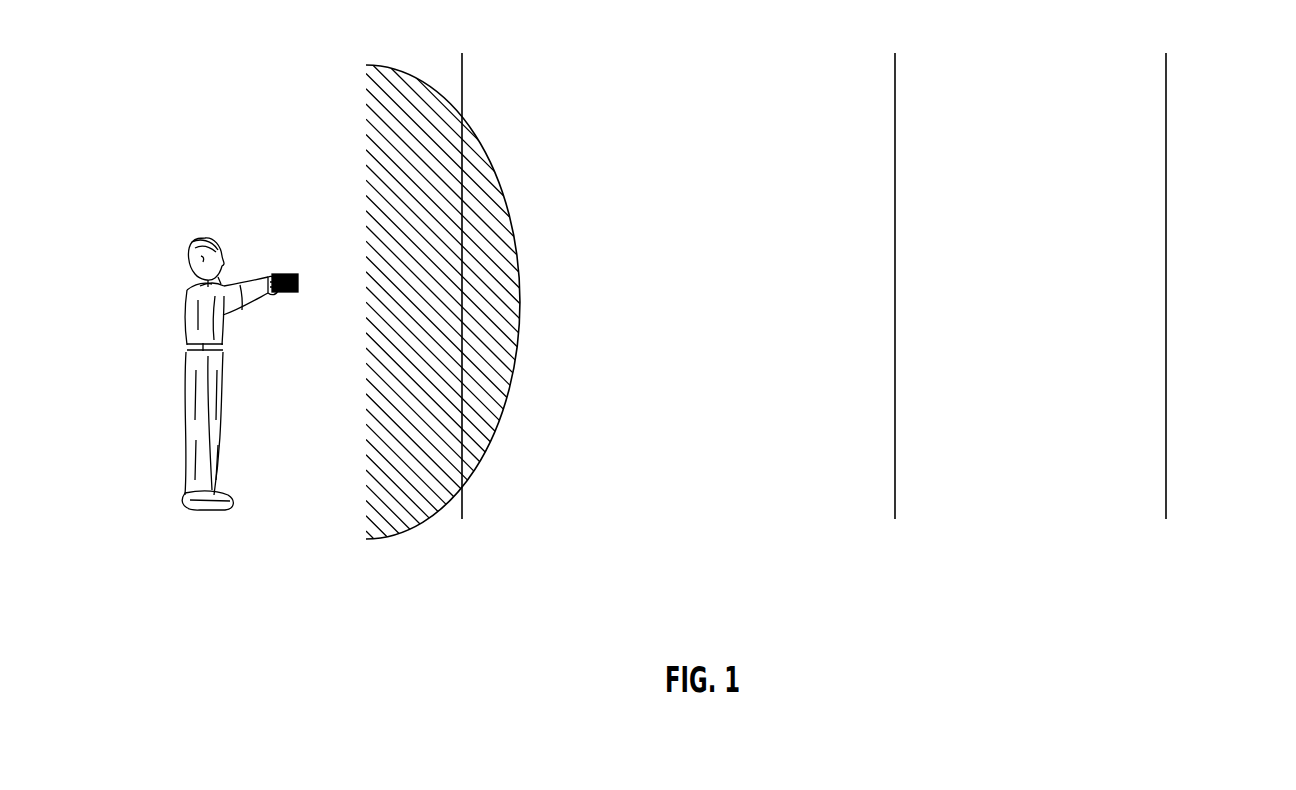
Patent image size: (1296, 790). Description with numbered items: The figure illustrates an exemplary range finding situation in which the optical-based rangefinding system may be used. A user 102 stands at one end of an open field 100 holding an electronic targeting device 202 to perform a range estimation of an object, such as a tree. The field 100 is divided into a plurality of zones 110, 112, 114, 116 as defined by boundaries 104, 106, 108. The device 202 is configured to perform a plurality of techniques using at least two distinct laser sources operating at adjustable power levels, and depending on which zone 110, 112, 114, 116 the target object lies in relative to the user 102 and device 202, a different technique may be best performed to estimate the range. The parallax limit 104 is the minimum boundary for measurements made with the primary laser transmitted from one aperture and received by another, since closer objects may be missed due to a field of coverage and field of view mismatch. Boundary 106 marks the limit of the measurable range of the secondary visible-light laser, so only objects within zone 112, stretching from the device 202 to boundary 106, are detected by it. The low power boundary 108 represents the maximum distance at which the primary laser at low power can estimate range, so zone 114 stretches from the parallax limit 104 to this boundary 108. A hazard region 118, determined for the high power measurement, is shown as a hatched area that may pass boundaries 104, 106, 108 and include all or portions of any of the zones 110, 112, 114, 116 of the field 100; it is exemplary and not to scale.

The open field 100 is at (150, 94).
The user 102 is at (168, 216).
The parallax limit 104 is at (462, 492).
The boundary 106 is at (896, 494).
The low power boundary 108 is at (1167, 494).
The zone 110 is at (289, 157).
The zone 112 is at (702, 187).
The zone 114 is at (1064, 187).
The zone 116 is at (1292, 187).
The hazard region 118 is at (481, 170).
The electronic targeting device 202 is at (297, 271).